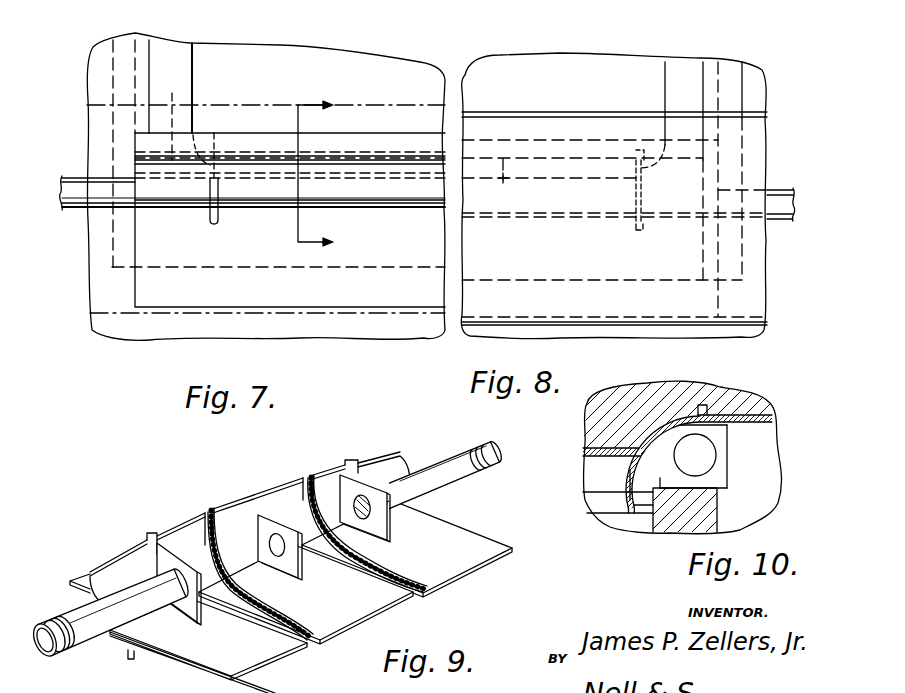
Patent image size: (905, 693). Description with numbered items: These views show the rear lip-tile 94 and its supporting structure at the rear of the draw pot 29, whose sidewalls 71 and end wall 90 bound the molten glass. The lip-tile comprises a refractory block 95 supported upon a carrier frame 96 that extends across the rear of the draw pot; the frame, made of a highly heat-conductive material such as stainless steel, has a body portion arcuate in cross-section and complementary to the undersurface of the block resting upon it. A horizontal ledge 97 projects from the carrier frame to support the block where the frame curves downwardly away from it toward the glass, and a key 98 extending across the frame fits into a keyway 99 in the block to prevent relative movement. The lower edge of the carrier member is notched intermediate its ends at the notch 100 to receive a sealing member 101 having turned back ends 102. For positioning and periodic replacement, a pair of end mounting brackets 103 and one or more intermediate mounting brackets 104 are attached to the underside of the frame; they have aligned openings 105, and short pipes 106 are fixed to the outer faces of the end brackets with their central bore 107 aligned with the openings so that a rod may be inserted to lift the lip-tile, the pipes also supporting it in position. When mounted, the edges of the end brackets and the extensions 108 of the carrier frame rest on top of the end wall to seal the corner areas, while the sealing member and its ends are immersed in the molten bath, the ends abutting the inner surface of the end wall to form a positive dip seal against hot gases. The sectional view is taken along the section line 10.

In FIG. 7, the section line 10— 10 is at (340, 100).
In FIG. 7, the draw pot 29 is at (176, 60).
In FIG. 8, the draw pot 29 is at (681, 77).
In FIG. 10, the draw pot 29 is at (667, 518).
In FIG. 7, the sidewalls 71 is at (180, 69).
In FIG. 8, the sidewalls 71 is at (680, 91).
In FIG. 10, the sidewalls 71 is at (583, 492).
In FIG. 7, the end wall 90 is at (403, 180).
In FIG. 8, the end wall 90 is at (558, 195).
In FIG. 10, the end wall 90 is at (690, 506).
In FIG. 8, the rear lip-tile 94 is at (510, 130).
In FIG. 7, the refractory block 95 is at (236, 104).
In FIG. 8, the refractory block 95 is at (562, 135).
In FIG. 10, the refractory block 95 is at (641, 415).
In FIG. 7, the carrier frame 96 is at (160, 246).
In FIG. 10, the carrier frame 96 is at (747, 424).
In FIG. 7, the horizontal ledge 97 is at (225, 148).
In FIG. 8, the horizontal ledge 97 is at (583, 142).
In FIG. 9, the horizontal ledge 97 is at (72, 586).
In FIG. 10, the horizontal ledge 97 is at (590, 456).
In FIG. 7, the key 98 is at (344, 207).
In FIG. 9, the key 98 is at (128, 660).
In FIG. 10, the key 98 is at (710, 413).
In FIG. 10, the keyway 99 is at (704, 403).
In FIG. 9, the notch 100 is at (241, 530).
In FIG. 8, the sealing member 101 is at (582, 180).
In FIG. 9, the sealing member 101 is at (238, 505).
In FIG. 10, the sealing member 101 is at (648, 506).
In FIG. 7, the turned back ends 102 is at (201, 150).
In FIG. 8, the turned back ends 102 is at (645, 166).
In FIG. 9, the turned back ends 102 is at (146, 540).
In FIG. 10, the turned back ends 102 is at (652, 508).
In FIG. 7, the end mounting brackets 103 is at (216, 190).
In FIG. 8, the end mounting brackets 103 is at (646, 224).
In FIG. 9, the end mounting brackets 103 is at (193, 624).
In FIG. 9, the intermediate mounting brackets 104 is at (297, 574).
In FIG. 10, the intermediate mounting brackets 104 is at (713, 440).
In FIG. 9, the aligned openings 105 is at (274, 557).
In FIG. 10, the aligned openings 105 is at (713, 468).
In FIG. 7, the short pipes 106 is at (72, 185).
In FIG. 8, the short pipes 106 is at (776, 200).
In FIG. 9, the short pipes 106 is at (467, 465).
In FIG. 9, the central bore 107 is at (355, 518).
In FIG. 7, the extensions 108 is at (150, 153).
In FIG. 9, the extensions 108 is at (104, 557).
In FIG. 10, the extensions 108 is at (628, 478).